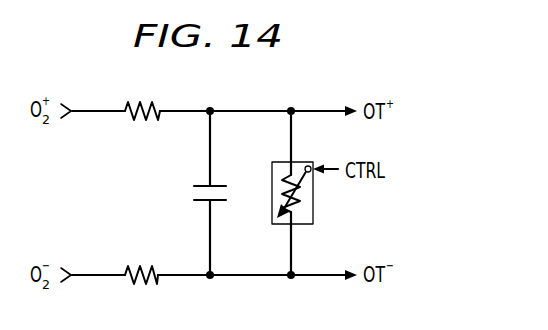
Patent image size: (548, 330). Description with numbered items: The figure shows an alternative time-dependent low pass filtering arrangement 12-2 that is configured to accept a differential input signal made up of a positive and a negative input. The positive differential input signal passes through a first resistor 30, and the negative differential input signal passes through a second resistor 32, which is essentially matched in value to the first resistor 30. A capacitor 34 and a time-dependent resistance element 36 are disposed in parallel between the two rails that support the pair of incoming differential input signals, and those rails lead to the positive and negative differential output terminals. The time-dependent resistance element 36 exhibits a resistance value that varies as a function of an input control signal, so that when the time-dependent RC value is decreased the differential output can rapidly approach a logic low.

The first resistor 30 is at (126, 114).
The second resistor 32 is at (127, 270).
The capacitor 34 is at (194, 193).
The variable resistor / transistor control element 36 is at (276, 162).
The time-dependent low pass filtering arrangement 12-2 is at (525, 171).